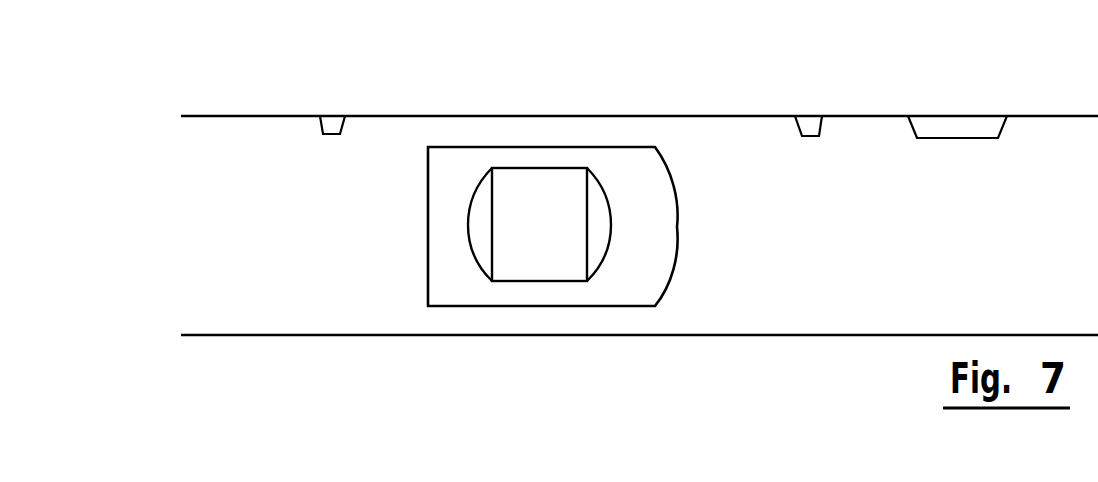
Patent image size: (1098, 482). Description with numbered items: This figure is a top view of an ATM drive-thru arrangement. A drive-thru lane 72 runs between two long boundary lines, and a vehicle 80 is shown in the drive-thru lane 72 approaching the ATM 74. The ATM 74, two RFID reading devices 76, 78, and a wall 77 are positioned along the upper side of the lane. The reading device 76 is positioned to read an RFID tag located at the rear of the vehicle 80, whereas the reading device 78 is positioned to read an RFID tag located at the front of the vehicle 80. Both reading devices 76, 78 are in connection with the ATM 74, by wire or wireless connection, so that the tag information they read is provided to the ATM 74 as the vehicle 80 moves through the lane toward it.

The drive-thru lane 72 is at (338, 286).
The ATM 74 is at (955, 125).
The RFID reading device 76 is at (330, 115).
The wall 77 is at (606, 115).
The RFID reading device 78 is at (815, 116).
The vehicle 80 is at (535, 282).